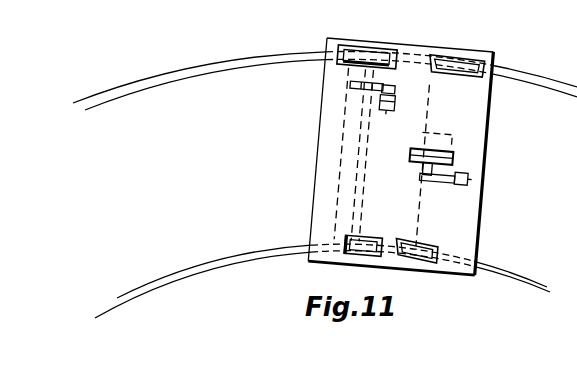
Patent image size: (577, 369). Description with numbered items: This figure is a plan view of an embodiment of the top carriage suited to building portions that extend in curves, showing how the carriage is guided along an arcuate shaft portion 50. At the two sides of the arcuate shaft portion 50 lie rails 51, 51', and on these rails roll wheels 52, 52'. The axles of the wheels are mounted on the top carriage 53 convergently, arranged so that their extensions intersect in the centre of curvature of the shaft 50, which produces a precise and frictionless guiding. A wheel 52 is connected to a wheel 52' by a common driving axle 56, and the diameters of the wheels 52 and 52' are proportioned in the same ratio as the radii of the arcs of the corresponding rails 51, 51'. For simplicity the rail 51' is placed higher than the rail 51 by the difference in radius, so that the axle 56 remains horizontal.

The arcuate shaft portion 50 is at (194, 180).
The rail 51 is at (325, 84).
The rail 51' is at (322, 281).
The wheel 52 is at (411, 45).
The wheel 52' is at (391, 239).
The top carriage 53 is at (488, 116).
The axle 56 is at (368, 155).